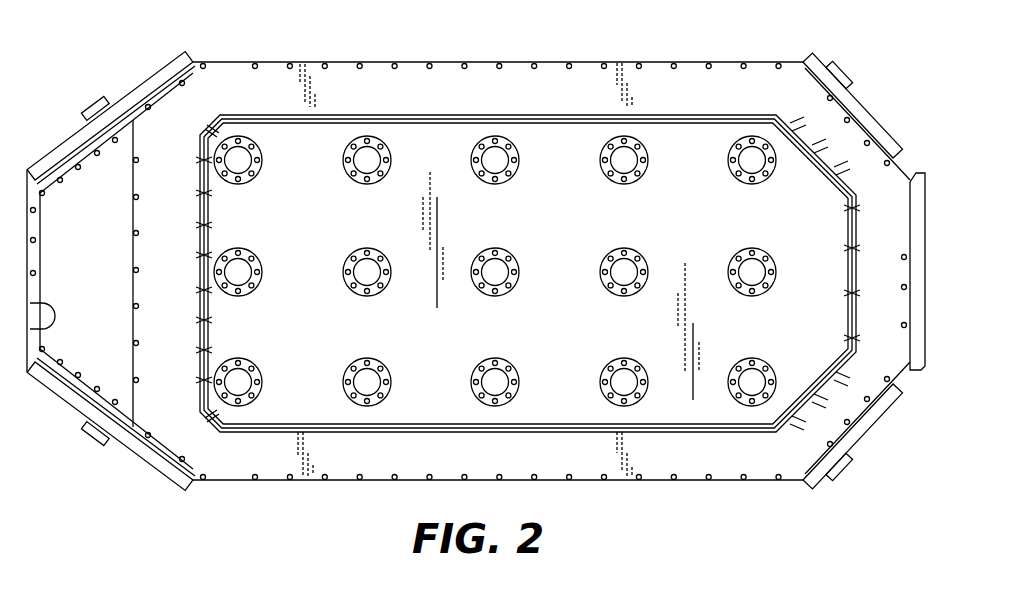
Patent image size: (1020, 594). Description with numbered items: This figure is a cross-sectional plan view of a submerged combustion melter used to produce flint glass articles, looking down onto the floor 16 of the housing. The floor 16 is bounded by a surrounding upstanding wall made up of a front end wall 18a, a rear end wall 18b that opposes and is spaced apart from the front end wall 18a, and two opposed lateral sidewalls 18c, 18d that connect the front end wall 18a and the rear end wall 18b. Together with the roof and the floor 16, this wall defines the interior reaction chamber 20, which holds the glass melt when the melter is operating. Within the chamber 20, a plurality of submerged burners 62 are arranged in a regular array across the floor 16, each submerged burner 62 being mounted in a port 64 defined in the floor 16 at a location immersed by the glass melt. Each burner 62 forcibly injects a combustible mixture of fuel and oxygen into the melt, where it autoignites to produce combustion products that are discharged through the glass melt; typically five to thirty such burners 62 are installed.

The floor 16 is at (569, 226).
The front end wall 18a is at (167, 268).
The rear end wall 18b is at (890, 253).
The lateral sidewall 18c is at (510, 80).
The lateral sidewall 18d is at (590, 463).
The interior reaction chamber 20 is at (669, 122).
The submerged burner 62 is at (240, 158).
The port 64 is at (244, 176).